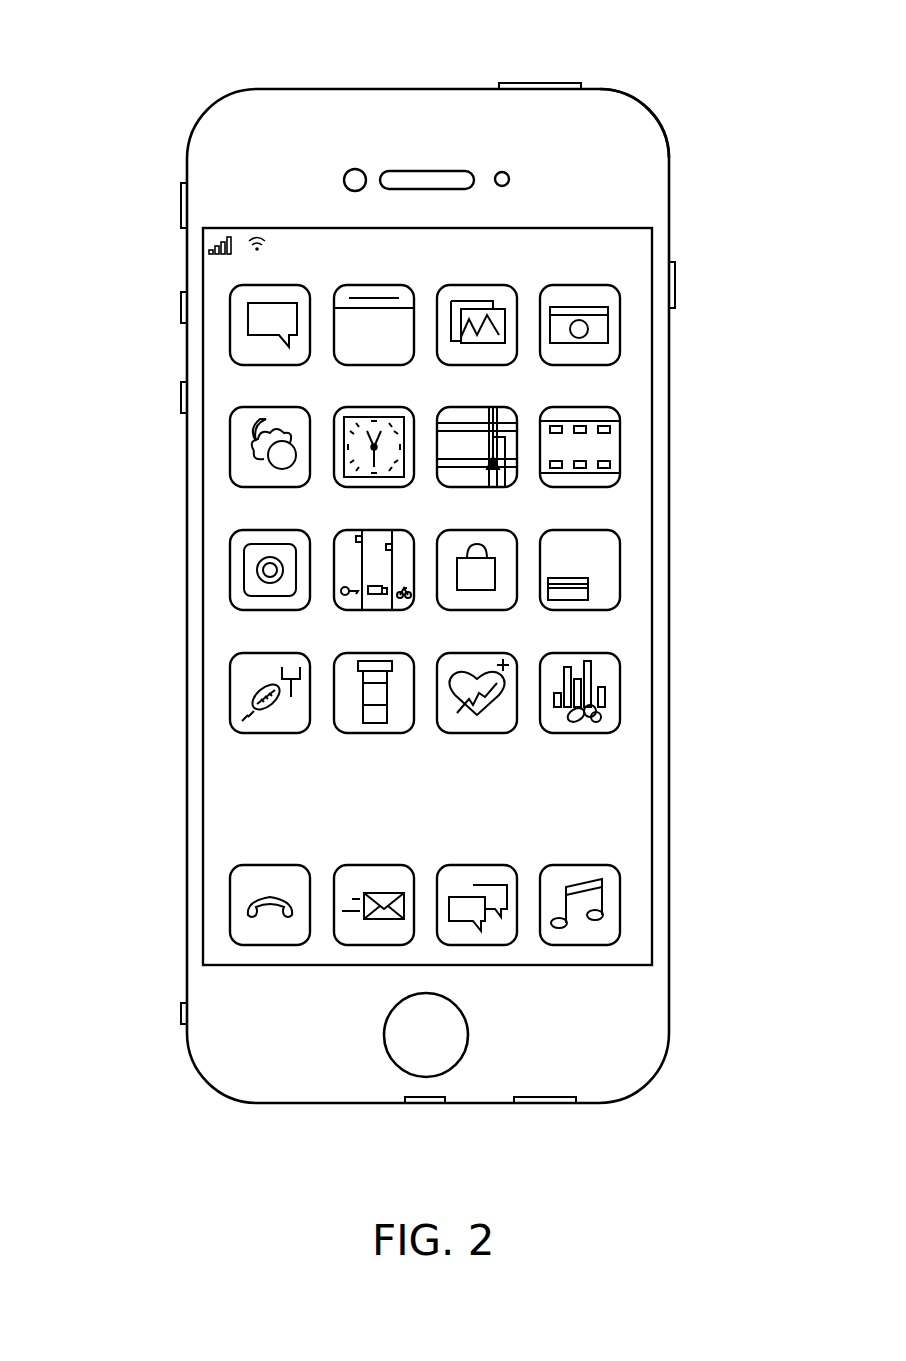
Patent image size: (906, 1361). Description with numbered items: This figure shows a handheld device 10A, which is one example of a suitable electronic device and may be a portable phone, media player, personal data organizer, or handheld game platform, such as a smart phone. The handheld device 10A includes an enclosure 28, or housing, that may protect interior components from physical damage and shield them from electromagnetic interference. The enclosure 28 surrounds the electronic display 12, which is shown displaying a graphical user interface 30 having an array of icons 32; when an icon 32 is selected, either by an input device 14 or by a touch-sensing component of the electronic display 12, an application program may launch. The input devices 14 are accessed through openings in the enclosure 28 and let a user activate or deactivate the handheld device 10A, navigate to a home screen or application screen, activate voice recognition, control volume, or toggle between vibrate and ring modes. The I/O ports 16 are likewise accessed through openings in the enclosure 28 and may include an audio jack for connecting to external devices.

The handheld device 10A is at (187, 49).
The electronic display 12 is at (669, 597).
The input devices 14 is at (541, 83).
The I/O ports 16 is at (423, 1103).
The enclosure 28 is at (669, 157).
The graphical user interface 30 is at (470, 596).
The icon 32 is at (464, 722).